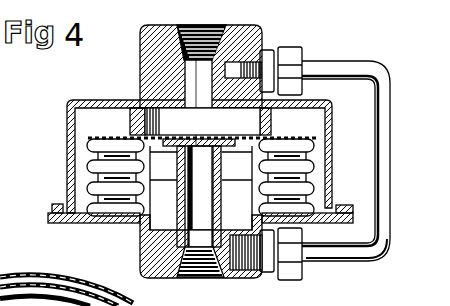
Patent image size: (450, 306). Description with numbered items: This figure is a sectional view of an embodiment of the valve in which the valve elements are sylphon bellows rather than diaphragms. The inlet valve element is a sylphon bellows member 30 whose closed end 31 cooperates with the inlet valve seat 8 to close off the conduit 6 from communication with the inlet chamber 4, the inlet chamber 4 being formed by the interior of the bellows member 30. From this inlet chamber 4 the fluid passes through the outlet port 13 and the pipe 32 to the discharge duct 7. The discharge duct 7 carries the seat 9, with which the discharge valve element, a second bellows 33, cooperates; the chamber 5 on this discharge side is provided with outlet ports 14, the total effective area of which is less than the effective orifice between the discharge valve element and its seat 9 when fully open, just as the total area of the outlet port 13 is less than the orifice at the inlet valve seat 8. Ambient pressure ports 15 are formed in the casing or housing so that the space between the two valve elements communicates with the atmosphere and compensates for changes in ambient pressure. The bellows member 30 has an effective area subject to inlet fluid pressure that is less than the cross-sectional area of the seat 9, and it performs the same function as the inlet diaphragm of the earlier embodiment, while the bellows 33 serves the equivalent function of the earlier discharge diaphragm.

The inlet chamber 4 is at (141, 226).
The chamber 5 is at (0, 162).
The conduit 6 is at (211, 193).
The discharge duct 7 is at (258, 112).
The inlet valve seat 8 is at (192, 152).
The seat 9 is at (268, 138).
The outlet port 13 is at (231, 227).
The outlet port 14 is at (66, 103).
The ambient pressure port 15 is at (111, 224).
The sylphon bellows member 30 is at (146, 173).
The closed end 31 is at (224, 162).
The pipe 32 is at (385, 200).
The bellows 33 is at (95, 139).